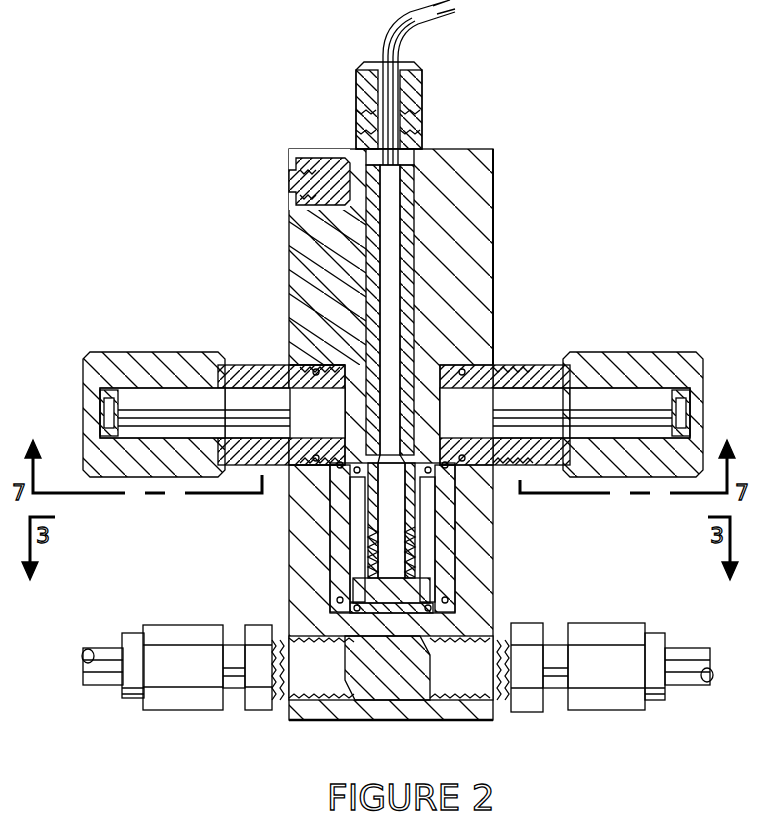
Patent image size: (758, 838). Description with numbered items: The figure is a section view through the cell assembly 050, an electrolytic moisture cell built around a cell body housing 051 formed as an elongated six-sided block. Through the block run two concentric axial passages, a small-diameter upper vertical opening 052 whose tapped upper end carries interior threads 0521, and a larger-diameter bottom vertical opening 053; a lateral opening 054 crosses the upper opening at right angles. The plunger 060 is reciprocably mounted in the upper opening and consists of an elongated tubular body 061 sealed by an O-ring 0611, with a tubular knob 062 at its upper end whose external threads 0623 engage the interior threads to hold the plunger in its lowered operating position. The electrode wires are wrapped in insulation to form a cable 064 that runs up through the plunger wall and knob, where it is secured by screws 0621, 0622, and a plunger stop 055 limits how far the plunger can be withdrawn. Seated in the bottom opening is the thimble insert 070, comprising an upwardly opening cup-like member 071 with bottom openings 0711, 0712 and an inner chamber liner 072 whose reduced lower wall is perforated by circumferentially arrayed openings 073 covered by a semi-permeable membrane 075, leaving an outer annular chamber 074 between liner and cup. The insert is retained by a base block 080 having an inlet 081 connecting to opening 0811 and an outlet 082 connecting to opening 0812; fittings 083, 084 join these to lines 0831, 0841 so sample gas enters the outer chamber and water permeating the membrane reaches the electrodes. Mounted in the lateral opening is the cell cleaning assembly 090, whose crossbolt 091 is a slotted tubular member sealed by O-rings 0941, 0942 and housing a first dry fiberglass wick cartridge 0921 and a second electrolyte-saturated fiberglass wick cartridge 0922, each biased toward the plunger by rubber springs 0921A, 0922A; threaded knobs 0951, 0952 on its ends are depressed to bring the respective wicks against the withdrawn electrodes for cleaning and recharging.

The cell assembly 050 is at (584, 223).
The cell body housing 051 is at (497, 232).
The elongate vertical opening 052 is at (493, 178).
The interior threads 0521 is at (497, 158).
The vertical opening 053 is at (497, 578).
The lateral opening 054 is at (330, 300).
The plunger stop 055 is at (300, 188).
The plunger 060 is at (424, 84).
The elongated tubular body 061 is at (340, 240).
The O-ring 0611 is at (497, 268).
The tubular knob 062 is at (420, 108).
The screw 0621 is at (356, 82).
The screw 0622 is at (355, 140).
The external threads 0623 is at (415, 150).
The cable 064 is at (382, 46).
The thimble insert 070 is at (478, 540).
The cup-like member 071 is at (290, 542).
The bottom opening 0711 is at (290, 598).
The bottom opening 0712 is at (497, 602).
The chamber liner 072 is at (290, 512).
The circumferentially arrayed openings 073 is at (497, 587).
The outer annular chamber 074 is at (290, 570).
The semi-permeable membrane 075 is at (497, 520).
The base block 080 is at (485, 722).
The inlet 081 is at (320, 722).
The opening 0811 is at (290, 625).
The opening 0812 is at (420, 720).
The outlet 082 is at (470, 725).
The fitting 083 is at (200, 700).
The line 0831 is at (112, 690).
The fitting 084 is at (626, 705).
The line 0841 is at (692, 648).
The cell cleaning assembly 090 is at (597, 348).
The crossbolt 091 is at (268, 360).
The first fiberglass wick cartridge 0921 is at (205, 478).
The rubber spring 0921A is at (103, 433).
The second fiberglass wick cartridge 0922 is at (605, 392).
The rubber spring 0922A is at (682, 440).
The O-ring 0941 is at (300, 345).
The O-ring 0942 is at (470, 350).
The crossbolt cleaner knob 0951 is at (95, 352).
The electrolyte knob 0952 is at (690, 352).